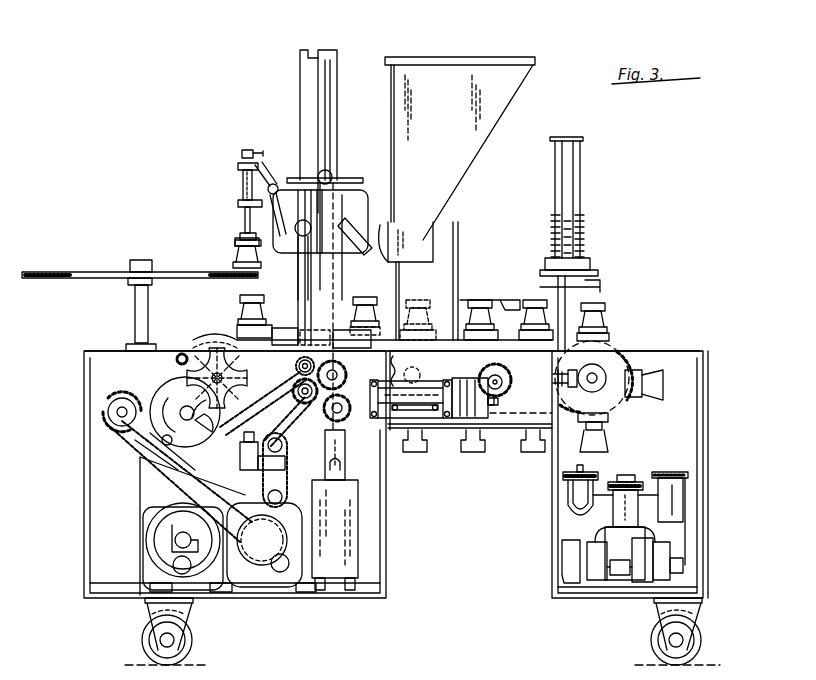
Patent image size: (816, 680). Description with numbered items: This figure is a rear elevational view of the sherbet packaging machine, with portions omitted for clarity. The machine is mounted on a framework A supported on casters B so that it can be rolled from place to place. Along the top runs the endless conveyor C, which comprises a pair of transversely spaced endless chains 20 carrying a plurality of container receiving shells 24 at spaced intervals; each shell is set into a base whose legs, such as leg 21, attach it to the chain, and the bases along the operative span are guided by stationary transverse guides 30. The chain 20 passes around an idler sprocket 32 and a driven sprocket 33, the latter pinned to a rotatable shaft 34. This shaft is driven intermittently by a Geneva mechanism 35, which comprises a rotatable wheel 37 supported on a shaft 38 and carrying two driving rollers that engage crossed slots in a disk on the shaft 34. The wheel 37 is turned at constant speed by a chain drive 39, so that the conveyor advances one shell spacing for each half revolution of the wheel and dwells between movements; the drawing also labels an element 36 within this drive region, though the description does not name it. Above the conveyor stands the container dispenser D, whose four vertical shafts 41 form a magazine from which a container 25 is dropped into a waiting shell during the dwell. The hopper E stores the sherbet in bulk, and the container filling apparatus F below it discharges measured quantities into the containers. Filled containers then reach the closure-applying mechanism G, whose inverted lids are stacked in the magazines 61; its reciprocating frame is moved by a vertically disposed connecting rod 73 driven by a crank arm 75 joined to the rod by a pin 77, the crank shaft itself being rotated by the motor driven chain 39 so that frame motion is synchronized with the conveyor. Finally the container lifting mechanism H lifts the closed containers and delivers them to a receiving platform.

The framework A is at (83, 600).
The casters B is at (194, 638).
The endless conveyor C is at (615, 352).
The container dispenser D is at (590, 262).
The hopper E is at (488, 117).
The container filling apparatus F is at (425, 238).
The closure-applying mechanism G is at (337, 171).
The container lifting mechanism H is at (243, 181).
The endless chains 20 is at (640, 355).
The leg 21 is at (242, 333).
The container receiving shells 24 is at (593, 303).
The container 25 is at (578, 215).
The stationary transverse guides 30 is at (508, 343).
The idler sprocket 32 is at (620, 420).
The driven sprocket 33 is at (176, 360).
The rotatable shaft 34 is at (240, 380).
The Geneva mechanism 35 is at (156, 396).
The chain drive 36 is at (165, 452).
The rotatable wheel 37 is at (248, 469).
The shaft 38 is at (181, 416).
The chain drive 39 is at (128, 432).
The vertical shafts 41 is at (578, 173).
The magazines 61 is at (322, 66).
The connecting rod 73 is at (297, 283).
The crank arm 75 is at (295, 400).
The pin 77 is at (300, 366).